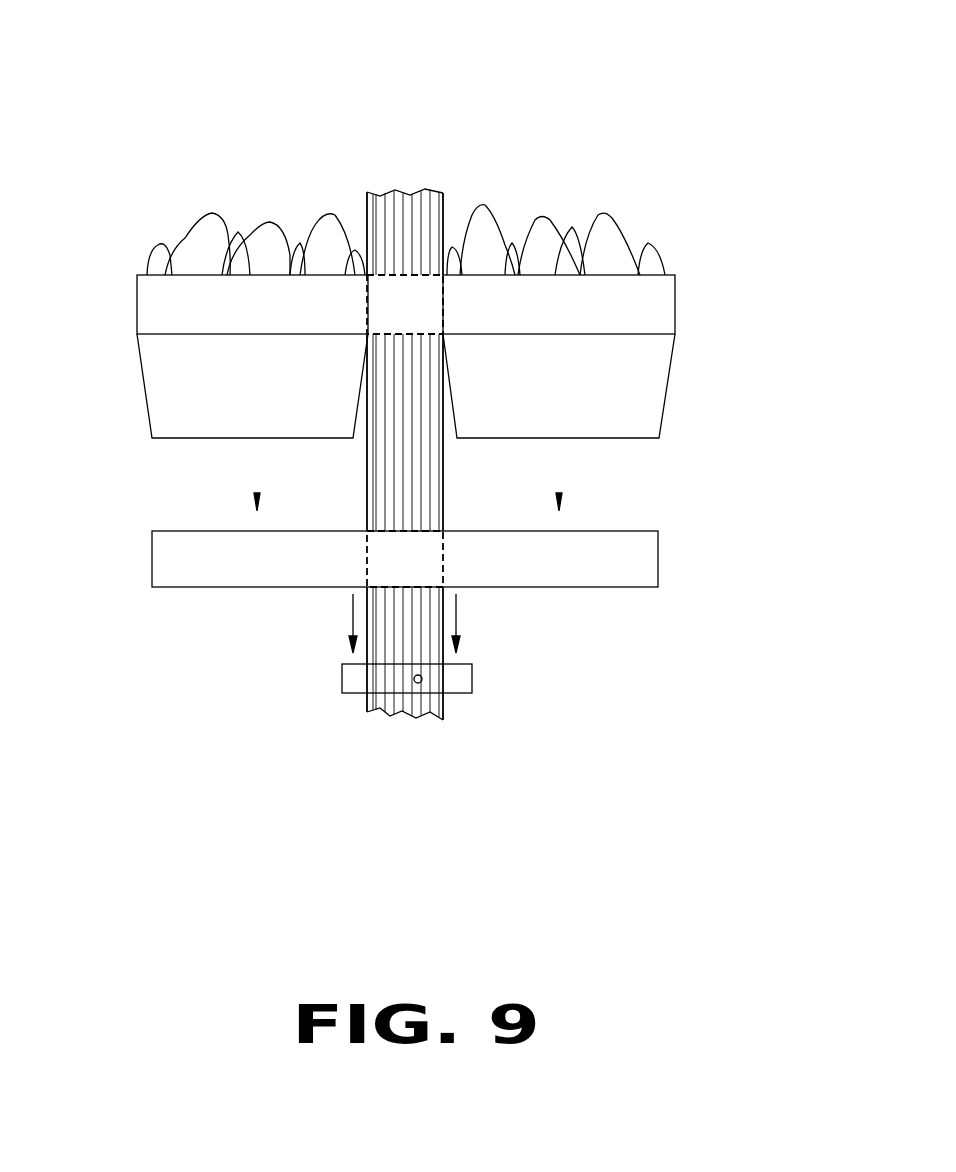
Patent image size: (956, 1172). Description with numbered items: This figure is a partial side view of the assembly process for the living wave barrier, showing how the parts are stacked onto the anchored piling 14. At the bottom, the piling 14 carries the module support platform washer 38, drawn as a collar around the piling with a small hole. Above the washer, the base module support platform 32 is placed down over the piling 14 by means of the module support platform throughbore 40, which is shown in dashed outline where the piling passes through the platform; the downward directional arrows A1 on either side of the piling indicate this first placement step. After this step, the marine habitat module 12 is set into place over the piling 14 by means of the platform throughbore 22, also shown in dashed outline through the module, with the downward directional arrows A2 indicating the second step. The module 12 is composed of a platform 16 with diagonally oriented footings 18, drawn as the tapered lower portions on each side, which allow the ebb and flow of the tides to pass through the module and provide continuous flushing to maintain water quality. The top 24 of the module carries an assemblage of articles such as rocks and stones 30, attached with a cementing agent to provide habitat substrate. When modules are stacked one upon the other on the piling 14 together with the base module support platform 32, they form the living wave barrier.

The marine habitat module 12 is at (690, 92).
The piling 14 is at (405, 195).
The platform 16 is at (152, 303).
The footings 18 is at (172, 393).
The platform throughbore 22 is at (398, 298).
The top 24 is at (675, 275).
The rocks and stones 30 is at (608, 245).
The base module support platform 32 is at (637, 573).
The module support platform washer 38 is at (450, 687).
The module support platform throughbore 40 is at (378, 557).
The directional arrows A1 is at (352, 621).
The directional arrows A2 is at (257, 477).